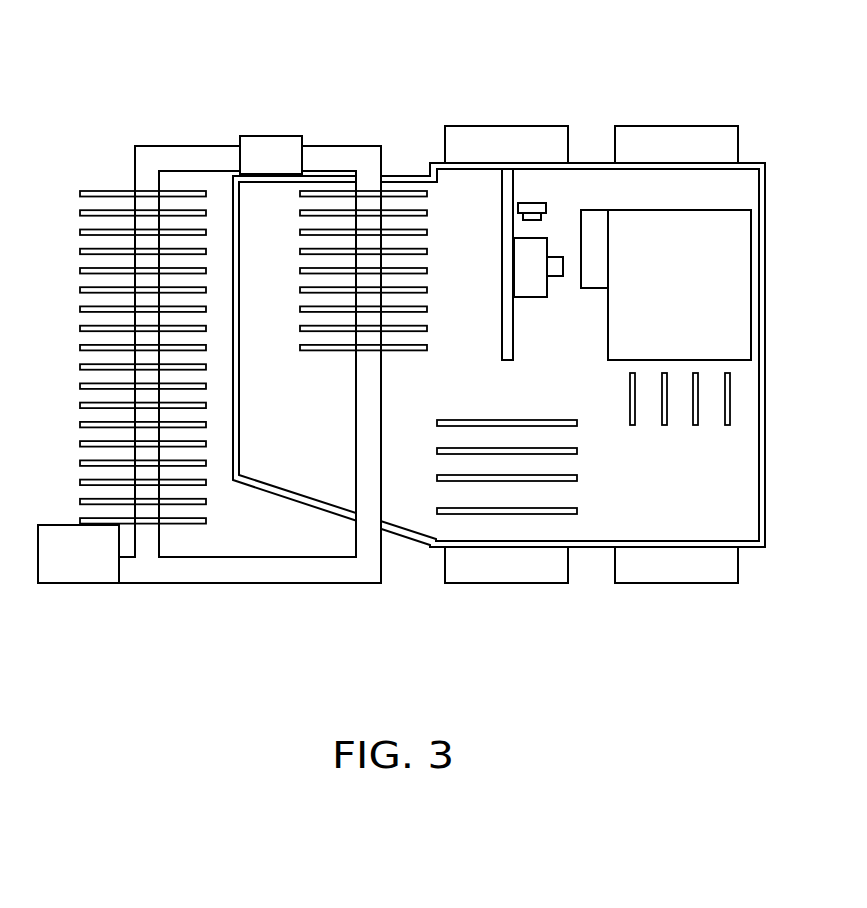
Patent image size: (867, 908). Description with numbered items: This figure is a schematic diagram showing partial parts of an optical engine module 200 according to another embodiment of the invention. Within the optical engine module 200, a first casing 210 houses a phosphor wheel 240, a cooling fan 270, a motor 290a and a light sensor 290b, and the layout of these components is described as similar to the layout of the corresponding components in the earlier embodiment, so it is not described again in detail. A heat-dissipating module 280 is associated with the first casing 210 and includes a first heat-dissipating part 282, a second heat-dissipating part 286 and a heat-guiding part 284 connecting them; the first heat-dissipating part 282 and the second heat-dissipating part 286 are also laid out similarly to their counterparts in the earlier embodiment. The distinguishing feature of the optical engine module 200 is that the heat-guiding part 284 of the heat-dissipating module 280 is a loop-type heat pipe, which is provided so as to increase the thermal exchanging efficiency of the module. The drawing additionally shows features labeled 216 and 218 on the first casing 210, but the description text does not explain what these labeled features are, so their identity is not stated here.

The optical engine module 200 is at (407, 351).
The first casing 210 is at (403, 537).
The vents 216 is at (510, 512).
The supporting feet 218 is at (660, 563).
The phosphor wheel 240 is at (488, 347).
The cooling fan 270 is at (660, 228).
The heat-dissipating module 280 is at (232, 300).
The first heat-dissipating part 282 is at (363, 204).
The heat-guiding part 284 is at (317, 153).
The second heat-dissipating part 286 is at (190, 193).
The motor 290a is at (525, 260).
The light sensor 290b is at (530, 205).